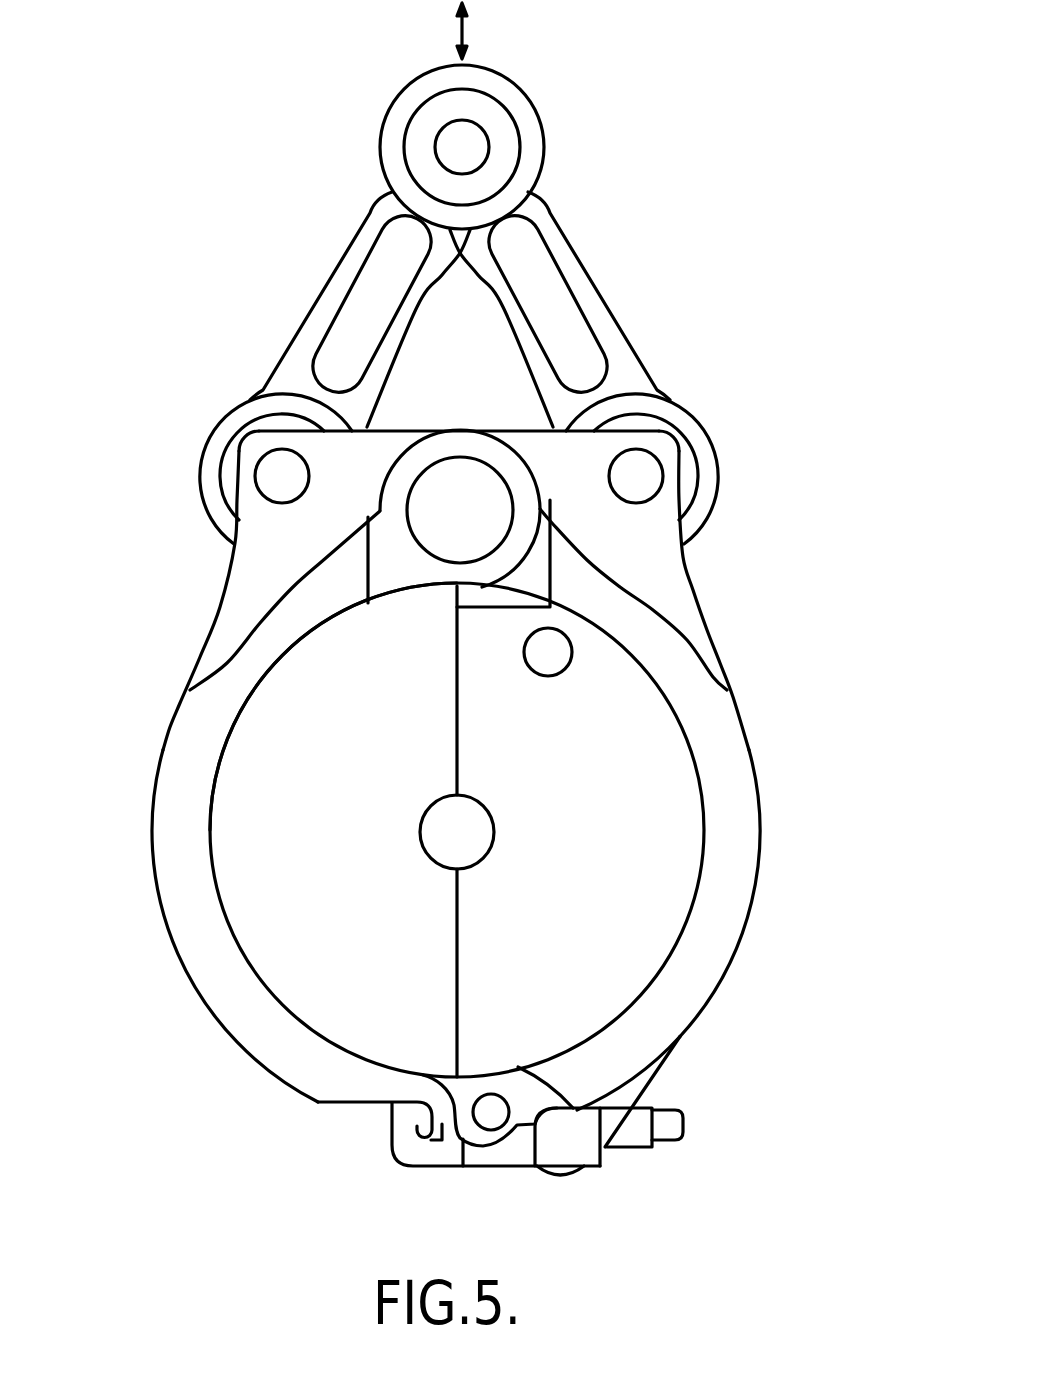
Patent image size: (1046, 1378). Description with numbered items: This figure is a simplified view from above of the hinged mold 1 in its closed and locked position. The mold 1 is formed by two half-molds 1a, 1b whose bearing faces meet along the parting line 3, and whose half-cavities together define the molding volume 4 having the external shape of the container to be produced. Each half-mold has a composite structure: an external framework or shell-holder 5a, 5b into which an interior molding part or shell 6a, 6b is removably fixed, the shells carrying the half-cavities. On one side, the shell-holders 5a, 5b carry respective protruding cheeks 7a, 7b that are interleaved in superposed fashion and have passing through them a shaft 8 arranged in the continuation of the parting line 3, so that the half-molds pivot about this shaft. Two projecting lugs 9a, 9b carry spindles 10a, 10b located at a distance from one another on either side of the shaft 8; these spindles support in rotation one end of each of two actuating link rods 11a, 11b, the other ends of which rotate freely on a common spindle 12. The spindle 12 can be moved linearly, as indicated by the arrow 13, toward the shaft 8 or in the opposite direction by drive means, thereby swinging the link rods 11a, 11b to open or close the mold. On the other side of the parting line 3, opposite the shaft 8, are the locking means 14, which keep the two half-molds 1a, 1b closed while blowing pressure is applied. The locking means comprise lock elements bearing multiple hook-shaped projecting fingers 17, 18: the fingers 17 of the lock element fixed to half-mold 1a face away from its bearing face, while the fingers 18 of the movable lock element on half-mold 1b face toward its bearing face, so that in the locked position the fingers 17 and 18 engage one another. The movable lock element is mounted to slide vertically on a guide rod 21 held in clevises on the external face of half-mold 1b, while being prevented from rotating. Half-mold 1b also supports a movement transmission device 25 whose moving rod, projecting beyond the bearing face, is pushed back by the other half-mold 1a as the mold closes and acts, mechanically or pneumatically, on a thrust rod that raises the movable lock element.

The hinged mold 1 is at (781, 710).
The first half-mold 1a is at (125, 907).
The second half-mold 1b is at (784, 850).
The parting line 3 is at (459, 937).
The molding volume 4 is at (459, 833).
The shell-holder 5a is at (205, 950).
The shell-holder 5b is at (715, 930).
The shell 6a is at (325, 985).
The shell 6b is at (630, 952).
The protruding cheek 7a is at (380, 577).
The protruding cheek 7b is at (530, 582).
The shaft 8 is at (455, 492).
The projecting lug 9a is at (258, 560).
The projecting lug 9b is at (660, 560).
The spindle 10a is at (272, 476).
The spindle 10b is at (643, 468).
The actuating link rod 11a is at (362, 252).
The actuating link rod 11b is at (562, 252).
The spindle 12 is at (462, 141).
The arrow 13 is at (466, 32).
The locking means 14 is at (383, 1180).
The hook-shaped projecting finger 17 is at (442, 1127).
The hook-shaped projecting finger 18 is at (403, 1137).
The rod 21 is at (489, 1118).
The movement transmission device 25 is at (655, 1165).